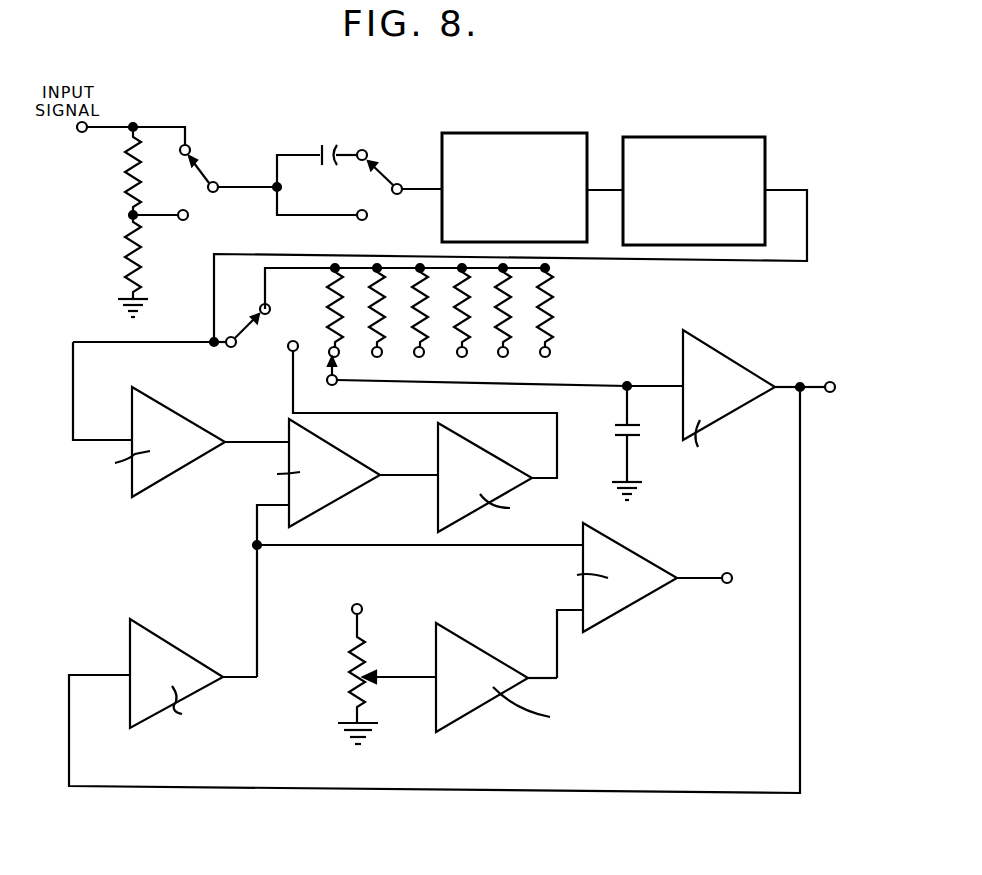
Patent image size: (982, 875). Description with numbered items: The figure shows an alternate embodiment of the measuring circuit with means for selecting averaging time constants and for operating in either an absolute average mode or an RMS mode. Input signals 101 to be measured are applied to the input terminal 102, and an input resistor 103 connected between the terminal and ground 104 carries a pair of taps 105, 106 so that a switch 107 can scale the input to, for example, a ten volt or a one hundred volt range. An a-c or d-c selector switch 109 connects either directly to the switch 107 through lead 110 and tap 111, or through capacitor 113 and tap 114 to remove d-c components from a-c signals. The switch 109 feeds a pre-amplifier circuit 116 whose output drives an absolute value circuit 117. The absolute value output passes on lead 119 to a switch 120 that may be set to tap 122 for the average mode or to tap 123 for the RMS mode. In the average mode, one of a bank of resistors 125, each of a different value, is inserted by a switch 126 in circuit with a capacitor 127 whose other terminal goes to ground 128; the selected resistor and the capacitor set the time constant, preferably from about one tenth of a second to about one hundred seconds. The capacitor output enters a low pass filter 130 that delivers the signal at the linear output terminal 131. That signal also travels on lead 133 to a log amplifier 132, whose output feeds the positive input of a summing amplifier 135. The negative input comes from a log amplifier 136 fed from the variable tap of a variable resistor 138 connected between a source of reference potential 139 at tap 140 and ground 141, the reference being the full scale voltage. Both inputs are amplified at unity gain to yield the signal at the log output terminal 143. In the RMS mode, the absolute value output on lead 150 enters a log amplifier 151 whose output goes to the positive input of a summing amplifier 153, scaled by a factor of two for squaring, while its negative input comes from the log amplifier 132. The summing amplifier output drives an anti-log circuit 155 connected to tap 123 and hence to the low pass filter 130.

The input signals 101 is at (151, 122).
The input terminal 102 is at (78, 132).
The input resistor 103 is at (126, 188).
The ground 104 is at (127, 301).
The tap 105 is at (190, 144).
The tap 106 is at (187, 219).
The switch 107 is at (211, 176).
The a-c or d-c selector switch 109 is at (394, 182).
The lead 110 is at (292, 213).
The tap 111 is at (366, 219).
The capacitor 113 is at (322, 145).
The tap 114 is at (363, 149).
The pre-amplifier circuit 116 is at (488, 133).
The absolute value circuit 117 is at (765, 171).
The lead 119 is at (718, 262).
The switch 120 is at (256, 325).
The tap 122 is at (228, 348).
The tap 123 is at (289, 350).
The resistors 125 is at (610, 310).
The switch 126 is at (340, 381).
The capacitor 127 is at (622, 425).
The ground 128 is at (620, 480).
The low pass filter 130 is at (683, 362).
The linear output terminal 131 is at (830, 392).
The log amplifier 132 is at (178, 647).
The lead 133 is at (608, 793).
The summing amplifier 135 is at (632, 605).
The log amplifier 136 is at (485, 650).
The variable resistor 138 is at (348, 647).
The source of reference potential 139 is at (413, 600).
The tap 140 is at (352, 609).
The ground 141 is at (364, 738).
The log output terminal 143 is at (728, 583).
The lead 150 is at (73, 383).
The log amplifier 151 is at (207, 428).
The summing amplifier 153 is at (353, 455).
The anti-log circuit 155 is at (488, 452).